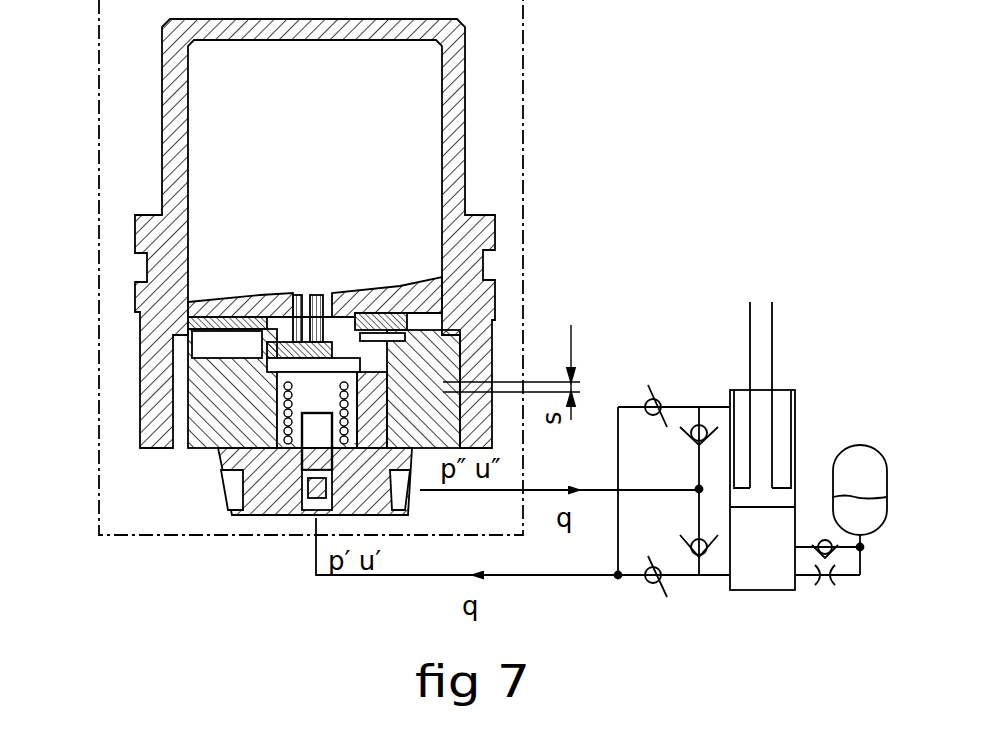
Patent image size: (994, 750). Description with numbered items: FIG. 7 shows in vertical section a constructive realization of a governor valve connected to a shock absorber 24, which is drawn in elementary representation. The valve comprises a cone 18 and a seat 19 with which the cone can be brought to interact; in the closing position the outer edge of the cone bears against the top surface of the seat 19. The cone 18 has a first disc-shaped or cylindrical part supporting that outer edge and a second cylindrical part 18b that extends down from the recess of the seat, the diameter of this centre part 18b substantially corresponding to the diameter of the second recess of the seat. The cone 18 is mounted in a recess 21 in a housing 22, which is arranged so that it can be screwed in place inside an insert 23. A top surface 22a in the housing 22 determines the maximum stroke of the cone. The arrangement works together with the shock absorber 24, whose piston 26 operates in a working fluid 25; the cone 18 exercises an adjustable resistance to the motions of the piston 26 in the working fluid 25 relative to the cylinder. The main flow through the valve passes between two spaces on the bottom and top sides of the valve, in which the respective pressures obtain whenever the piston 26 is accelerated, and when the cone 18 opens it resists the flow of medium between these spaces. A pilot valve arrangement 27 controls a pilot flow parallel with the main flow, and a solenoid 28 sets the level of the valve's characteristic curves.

The cone 18 is at (228, 438).
The second cylindrical part 18b is at (290, 512).
The seat 19 is at (228, 516).
The recess 21 is at (390, 370).
The housing 22 is at (453, 362).
The top surface 22a is at (453, 270).
The insert 23 is at (468, 170).
The shock absorber 24 is at (795, 390).
The working fluid 25 is at (762, 558).
The piston 26 is at (780, 493).
The pilot valve arrangement 27 is at (297, 343).
The solenoid 28 is at (363, 203).